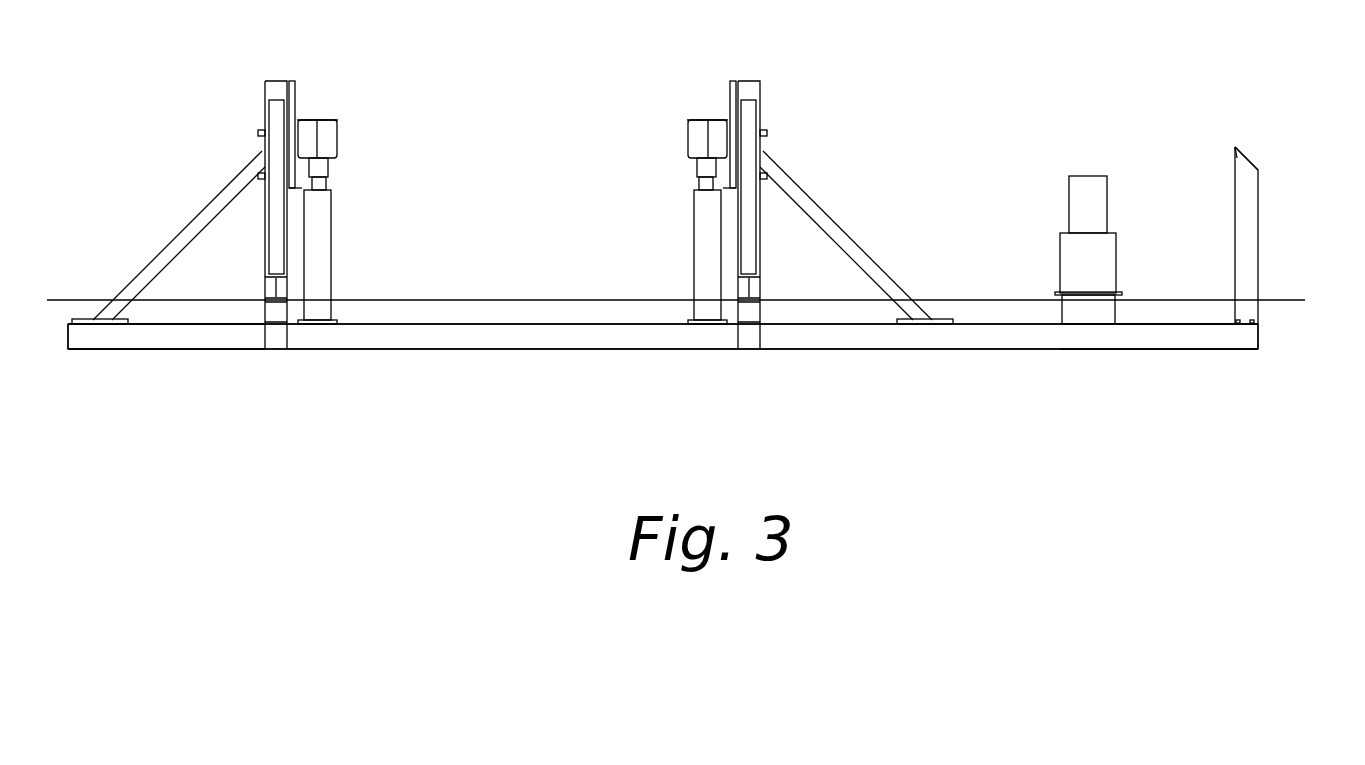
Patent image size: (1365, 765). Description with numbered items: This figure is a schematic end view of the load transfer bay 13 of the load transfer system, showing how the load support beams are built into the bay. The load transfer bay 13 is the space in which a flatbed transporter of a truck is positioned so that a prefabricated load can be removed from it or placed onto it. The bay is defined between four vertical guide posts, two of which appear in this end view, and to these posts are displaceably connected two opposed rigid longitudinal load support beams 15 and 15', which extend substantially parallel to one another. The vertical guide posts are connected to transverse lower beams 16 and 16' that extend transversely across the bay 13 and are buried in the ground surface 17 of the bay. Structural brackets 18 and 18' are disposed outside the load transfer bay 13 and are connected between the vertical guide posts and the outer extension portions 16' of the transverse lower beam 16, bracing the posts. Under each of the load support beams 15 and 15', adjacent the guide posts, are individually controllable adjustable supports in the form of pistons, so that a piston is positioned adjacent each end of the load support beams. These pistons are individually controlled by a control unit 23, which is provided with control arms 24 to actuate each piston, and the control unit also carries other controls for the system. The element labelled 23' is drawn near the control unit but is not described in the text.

The load transfer bay 13 is at (538, 285).
The load support beam 15 is at (675, 118).
The load support beam 15' is at (348, 125).
The transverse lower beam 16 is at (663, 375).
The outer extension portion of transverse lower beam 16' is at (663, 375).
The ground surface 17 is at (1290, 300).
The structural bracket 18 is at (168, 237).
The structural bracket 18' is at (856, 237).
The control unit 23 is at (1287, 235).
The support block 23' is at (1124, 250).
The control arm 24 is at (1247, 153).